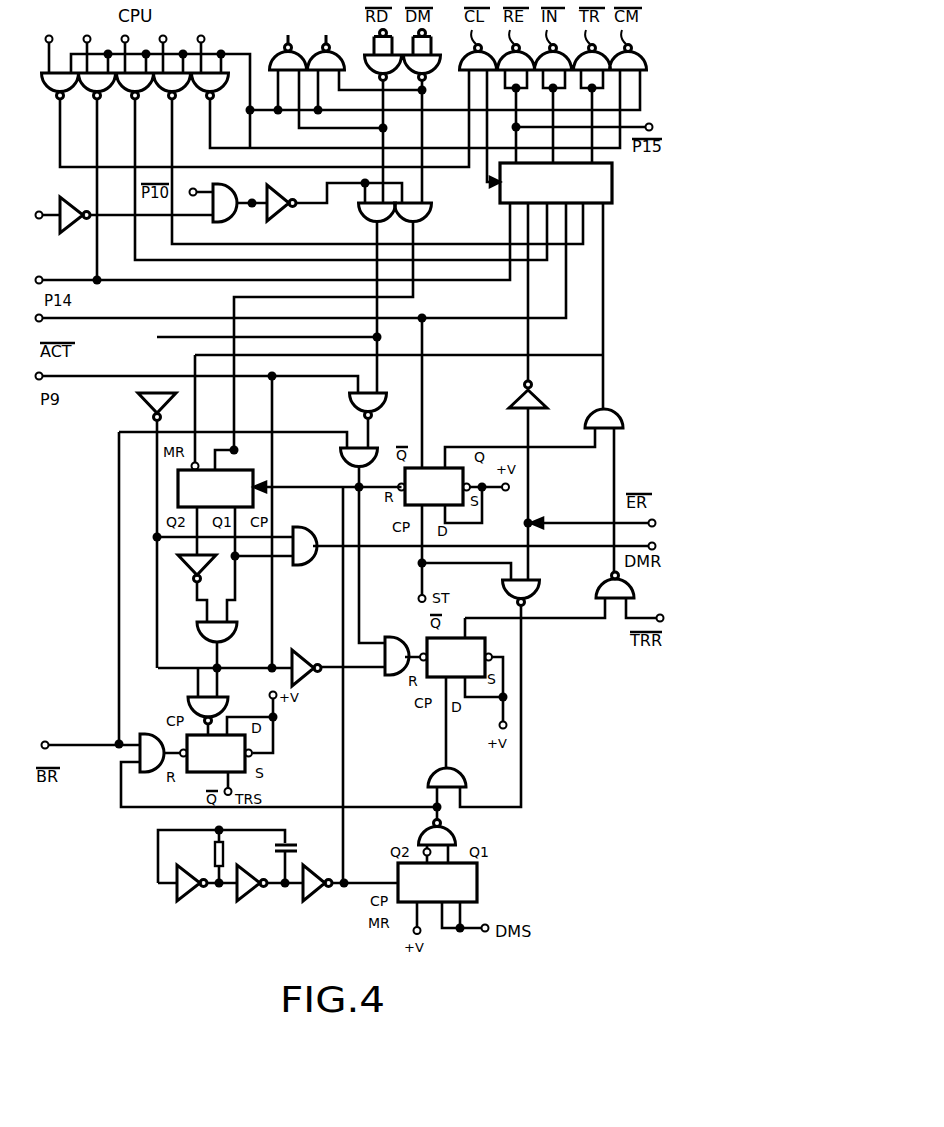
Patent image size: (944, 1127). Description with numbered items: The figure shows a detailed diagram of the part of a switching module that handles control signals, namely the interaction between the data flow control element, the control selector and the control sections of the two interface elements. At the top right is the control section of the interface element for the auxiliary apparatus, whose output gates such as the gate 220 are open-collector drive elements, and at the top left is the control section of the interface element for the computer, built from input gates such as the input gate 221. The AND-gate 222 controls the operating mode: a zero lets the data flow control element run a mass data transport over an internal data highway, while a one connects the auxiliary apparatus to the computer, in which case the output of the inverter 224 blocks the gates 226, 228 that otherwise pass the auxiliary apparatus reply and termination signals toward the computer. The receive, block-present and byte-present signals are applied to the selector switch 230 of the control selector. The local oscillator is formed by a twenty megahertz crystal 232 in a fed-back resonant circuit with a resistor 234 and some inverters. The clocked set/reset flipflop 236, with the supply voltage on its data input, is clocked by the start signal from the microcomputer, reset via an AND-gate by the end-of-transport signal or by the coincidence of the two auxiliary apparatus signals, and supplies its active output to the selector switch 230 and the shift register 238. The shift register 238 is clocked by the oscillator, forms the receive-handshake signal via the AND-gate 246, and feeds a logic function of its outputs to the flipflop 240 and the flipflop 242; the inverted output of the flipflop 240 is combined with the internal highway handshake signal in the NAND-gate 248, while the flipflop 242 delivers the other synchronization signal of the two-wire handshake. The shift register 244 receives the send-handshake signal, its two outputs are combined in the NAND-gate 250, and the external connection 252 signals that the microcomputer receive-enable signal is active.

The gate 220 is at (645, 60).
The input gate 221 is at (42, 78).
The AND-gate 222 is at (236, 216).
The inverter 224 is at (286, 216).
The gate 226 is at (362, 212).
The gate 228 is at (430, 212).
The selector switch 230 is at (612, 188).
The crystal 232 is at (294, 845).
The resistor 234 is at (223, 856).
The clocked set/reset flipflop 236 is at (432, 468).
The shift register 238 is at (244, 470).
The clocked set/reset flipflop 240 is at (476, 638).
The clocked set/reset flipflop 242 is at (192, 772).
The shift register 244 is at (455, 884).
The AND-gate 246 is at (310, 566).
The NAND-gate 248 is at (598, 592).
The NAND-gate 250 is at (452, 830).
The external connection 252 is at (40, 232).